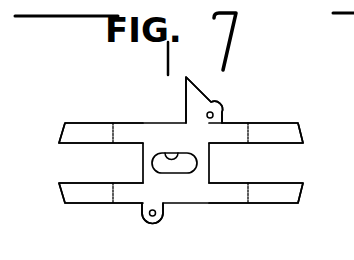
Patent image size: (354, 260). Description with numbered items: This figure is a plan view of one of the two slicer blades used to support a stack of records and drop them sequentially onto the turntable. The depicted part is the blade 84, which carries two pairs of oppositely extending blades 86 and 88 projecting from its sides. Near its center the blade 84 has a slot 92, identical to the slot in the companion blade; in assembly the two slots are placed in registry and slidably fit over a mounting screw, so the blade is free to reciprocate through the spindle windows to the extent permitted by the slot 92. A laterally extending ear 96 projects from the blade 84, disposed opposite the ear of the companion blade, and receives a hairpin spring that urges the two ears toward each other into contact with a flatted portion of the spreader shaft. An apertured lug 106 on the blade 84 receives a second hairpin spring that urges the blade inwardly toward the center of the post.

The blade 84 is at (141, 123).
The oppositely extending blades 86 is at (63, 146).
The oppositely extending blades 88 is at (297, 145).
The slot 92 is at (168, 153).
The ear 96 is at (197, 88).
The apertured lug 106 is at (150, 224).